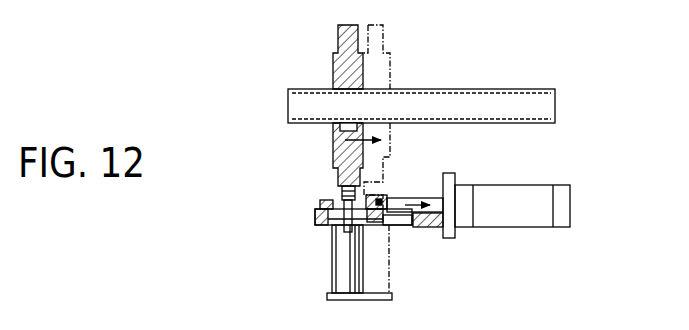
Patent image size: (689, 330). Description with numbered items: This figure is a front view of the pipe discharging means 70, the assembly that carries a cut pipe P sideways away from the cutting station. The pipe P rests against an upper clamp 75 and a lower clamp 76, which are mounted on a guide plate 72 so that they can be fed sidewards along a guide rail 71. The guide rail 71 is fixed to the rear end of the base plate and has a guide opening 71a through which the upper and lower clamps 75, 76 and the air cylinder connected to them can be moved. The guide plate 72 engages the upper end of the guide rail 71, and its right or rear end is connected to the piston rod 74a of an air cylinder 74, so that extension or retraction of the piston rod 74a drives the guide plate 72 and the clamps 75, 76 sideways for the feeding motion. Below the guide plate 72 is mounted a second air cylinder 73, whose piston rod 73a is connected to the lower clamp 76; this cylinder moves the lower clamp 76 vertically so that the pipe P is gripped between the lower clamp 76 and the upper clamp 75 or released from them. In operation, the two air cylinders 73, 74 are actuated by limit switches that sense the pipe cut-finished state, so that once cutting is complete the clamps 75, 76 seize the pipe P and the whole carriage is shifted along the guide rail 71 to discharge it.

The pipe P is at (486, 89).
The pipe discharging means 70 is at (548, 153).
The guide rail 71 is at (422, 229).
The guide opening 71a is at (398, 228).
The guide plate 72 is at (318, 213).
The air cylinder 73 is at (336, 266).
The piston rod 73a is at (340, 200).
The air cylinder 74 is at (570, 210).
The piston rod 74a is at (398, 196).
The upper clamp 75 is at (338, 45).
The lower clamp 76 is at (345, 140).